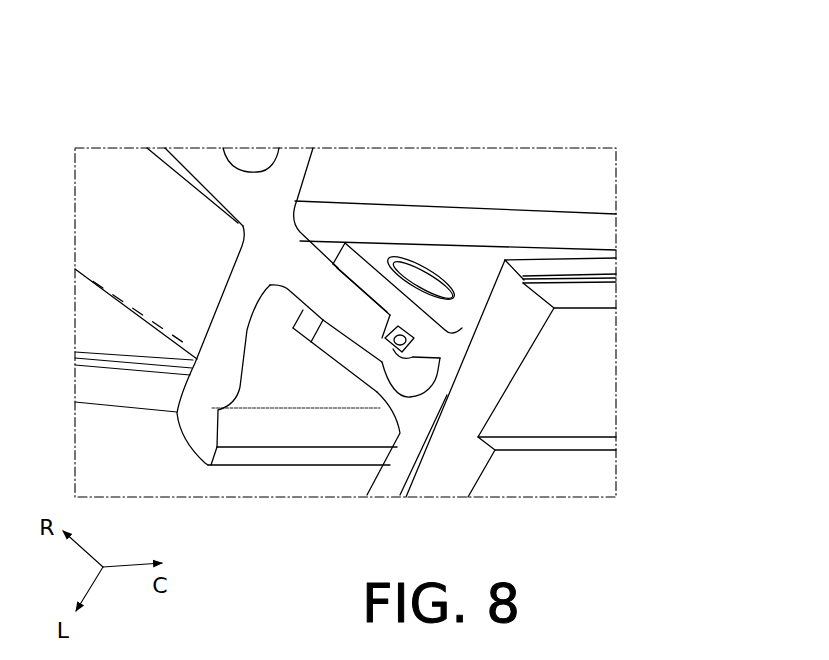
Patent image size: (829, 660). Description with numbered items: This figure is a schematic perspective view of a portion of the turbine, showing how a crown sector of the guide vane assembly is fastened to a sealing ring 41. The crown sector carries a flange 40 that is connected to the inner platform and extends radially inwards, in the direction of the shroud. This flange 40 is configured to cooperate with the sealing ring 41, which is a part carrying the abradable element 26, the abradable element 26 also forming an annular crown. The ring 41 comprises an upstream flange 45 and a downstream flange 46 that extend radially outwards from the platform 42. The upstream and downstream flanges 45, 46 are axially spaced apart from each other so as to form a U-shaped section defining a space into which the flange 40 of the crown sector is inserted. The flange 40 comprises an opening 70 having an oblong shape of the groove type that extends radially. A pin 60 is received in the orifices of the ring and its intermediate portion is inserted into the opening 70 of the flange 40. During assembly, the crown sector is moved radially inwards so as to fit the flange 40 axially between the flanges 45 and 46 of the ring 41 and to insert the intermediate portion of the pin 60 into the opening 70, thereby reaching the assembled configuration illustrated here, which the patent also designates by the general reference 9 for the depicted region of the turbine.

The vehicle body structure 9 is at (328, 94).
The flange 40 is at (317, 270).
The pin 60 is at (410, 273).
The abradable element 26 is at (592, 296).
The sealing ring 41 is at (318, 427).
The upstream flange 45 is at (347, 270).
The downstream flange 46 is at (382, 387).
The platform 42 is at (380, 449).
The opening 70 is at (413, 371).